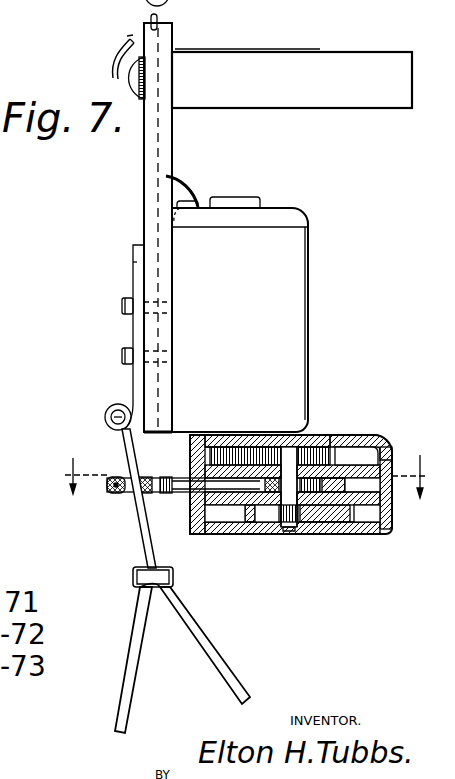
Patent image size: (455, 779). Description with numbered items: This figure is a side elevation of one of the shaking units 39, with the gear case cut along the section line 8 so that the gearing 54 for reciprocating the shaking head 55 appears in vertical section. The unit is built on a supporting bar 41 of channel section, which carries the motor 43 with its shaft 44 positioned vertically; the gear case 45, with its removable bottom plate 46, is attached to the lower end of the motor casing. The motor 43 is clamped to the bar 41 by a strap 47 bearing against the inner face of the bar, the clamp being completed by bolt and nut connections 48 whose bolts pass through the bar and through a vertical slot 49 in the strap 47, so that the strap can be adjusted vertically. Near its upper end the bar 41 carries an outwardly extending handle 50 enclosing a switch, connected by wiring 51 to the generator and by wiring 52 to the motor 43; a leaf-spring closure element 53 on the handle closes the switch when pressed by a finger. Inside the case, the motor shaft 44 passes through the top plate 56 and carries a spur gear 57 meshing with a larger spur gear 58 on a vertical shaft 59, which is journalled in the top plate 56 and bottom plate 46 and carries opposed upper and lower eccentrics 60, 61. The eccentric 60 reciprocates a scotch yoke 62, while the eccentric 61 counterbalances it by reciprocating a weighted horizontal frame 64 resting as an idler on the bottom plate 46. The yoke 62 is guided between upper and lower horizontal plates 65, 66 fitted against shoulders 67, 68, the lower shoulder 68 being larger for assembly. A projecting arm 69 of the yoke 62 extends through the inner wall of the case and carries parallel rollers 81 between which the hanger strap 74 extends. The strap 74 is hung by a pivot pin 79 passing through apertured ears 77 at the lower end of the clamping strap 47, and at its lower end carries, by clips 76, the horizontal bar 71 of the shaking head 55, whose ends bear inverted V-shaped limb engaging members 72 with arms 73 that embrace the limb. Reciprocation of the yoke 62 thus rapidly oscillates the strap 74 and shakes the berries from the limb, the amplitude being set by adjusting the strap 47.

The section line 8 is at (235, 494).
The shaking unit 39 is at (141, 158).
The supporting bar 41 is at (158, 84).
The motor 43 is at (292, 328).
The motor shaft 44 is at (236, 446).
The gear case 45 is at (352, 435).
The bottom plate 46 is at (368, 524).
The strap 47 is at (135, 250).
The bolt and nut connections 48 is at (124, 353).
The vertical slot 49 is at (135, 267).
The handle 50 is at (348, 70).
The wiring 51 is at (126, 47).
The wiring 52 is at (172, 182).
The closure element 53 is at (236, 50).
The gearing 54 is at (335, 457).
The shaking head 55 is at (190, 608).
The top plate 56 is at (200, 440).
The spur gear 57 is at (218, 446).
The spur gear 58 is at (270, 440).
The vertical shaft 59 is at (306, 438).
The upper eccentric 60 is at (313, 502).
The lower eccentric 61 is at (270, 512).
The scotch yoke 62 is at (337, 514).
The weighted horizontal frame 64 is at (268, 514).
The upper horizontal plate 65 is at (208, 477).
The lower horizontal plate 66 is at (205, 506).
The upper shoulder 67 is at (385, 463).
The lower shoulder 68 is at (388, 487).
The projecting arm 69 is at (160, 479).
The horizontal bar 71 is at (135, 589).
The limb straddling and engaging members 72 is at (130, 637).
The arms 73 is at (215, 658).
The hanger strap 74 is at (140, 536).
The clips 76 is at (240, 520).
The apertured ears 77 is at (110, 407).
The pivot pin 79 is at (113, 418).
The rollers 81 is at (148, 484).